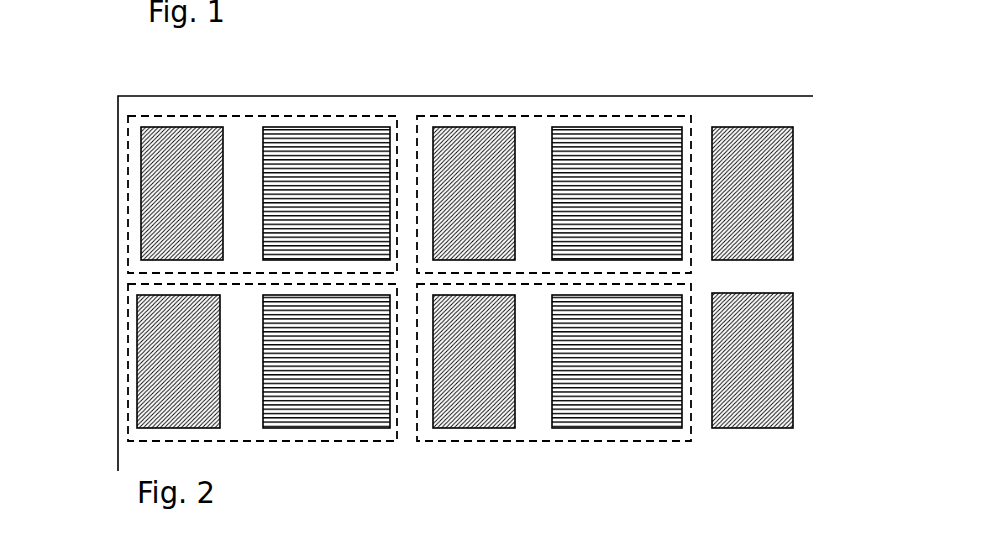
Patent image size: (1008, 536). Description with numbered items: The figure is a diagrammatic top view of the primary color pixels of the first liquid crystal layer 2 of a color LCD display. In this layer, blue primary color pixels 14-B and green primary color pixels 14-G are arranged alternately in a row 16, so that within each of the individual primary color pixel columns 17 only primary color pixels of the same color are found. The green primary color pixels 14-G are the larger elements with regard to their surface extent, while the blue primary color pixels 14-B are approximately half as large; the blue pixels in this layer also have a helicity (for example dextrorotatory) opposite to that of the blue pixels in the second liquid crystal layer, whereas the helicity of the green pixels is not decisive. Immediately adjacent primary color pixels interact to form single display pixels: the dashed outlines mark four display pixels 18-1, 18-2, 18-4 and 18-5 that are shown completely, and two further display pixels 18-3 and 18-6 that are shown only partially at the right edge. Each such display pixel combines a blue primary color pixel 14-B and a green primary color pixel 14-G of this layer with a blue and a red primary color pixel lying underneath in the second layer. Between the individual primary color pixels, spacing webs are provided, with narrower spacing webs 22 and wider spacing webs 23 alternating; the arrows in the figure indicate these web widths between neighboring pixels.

The first liquid crystal layer 2 is at (133, 108).
The primary color pixel columns 17 is at (292, 85).
The display pixel 18-1 is at (128, 146).
The display pixel 18-2 is at (530, 113).
The display pixel 18-3 is at (809, 132).
The display pixel 18-4 is at (128, 440).
The display pixel 18-5 is at (535, 441).
The display pixel 18-6 is at (801, 420).
The blue primary color pixels 14-B is at (472, 128).
The green primary color pixels 14-G is at (341, 143).
The narrower spacing webs 22 is at (532, 168).
The wider spacing webs 23 is at (408, 168).
The row 16 is at (809, 211).